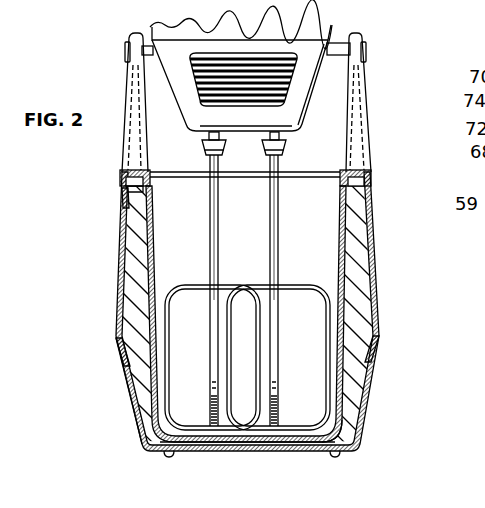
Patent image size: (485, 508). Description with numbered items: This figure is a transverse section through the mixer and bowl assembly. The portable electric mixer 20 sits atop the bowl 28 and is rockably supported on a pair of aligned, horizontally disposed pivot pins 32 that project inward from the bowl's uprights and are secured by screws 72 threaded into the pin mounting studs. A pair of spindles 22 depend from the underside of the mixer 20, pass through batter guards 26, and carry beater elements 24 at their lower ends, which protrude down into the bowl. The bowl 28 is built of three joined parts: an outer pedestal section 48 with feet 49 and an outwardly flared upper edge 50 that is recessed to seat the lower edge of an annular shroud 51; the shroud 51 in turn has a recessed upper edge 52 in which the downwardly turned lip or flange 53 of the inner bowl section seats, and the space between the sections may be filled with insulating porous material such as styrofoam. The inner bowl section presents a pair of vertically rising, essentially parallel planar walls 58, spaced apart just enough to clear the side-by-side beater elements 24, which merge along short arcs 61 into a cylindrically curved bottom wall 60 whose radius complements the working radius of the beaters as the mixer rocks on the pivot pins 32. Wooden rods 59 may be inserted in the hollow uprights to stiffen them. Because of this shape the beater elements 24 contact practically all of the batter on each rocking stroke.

The portable electric mixer 20 is at (302, 29).
The spindles 22 is at (271, 217).
The beater elements 24 is at (253, 285).
The batter guards 26 is at (267, 144).
The bowl 28 is at (242, 254).
The pivot pins 32 is at (150, 47).
The outer or pedestal section 48 is at (126, 406).
The feet 49 is at (167, 457).
The outwardly flared upper edge 50 is at (118, 371).
The annular section or shroud 51 is at (120, 244).
The recessed upper edge 52 is at (126, 202).
The downwardly turned lip or flange 53 is at (128, 189).
The planar walls 58 is at (150, 221).
The wooden rods 59 is at (124, 178).
The bottom wall 60 is at (250, 451).
The short arcs 61 is at (345, 420).
The screws 72 is at (125, 52).